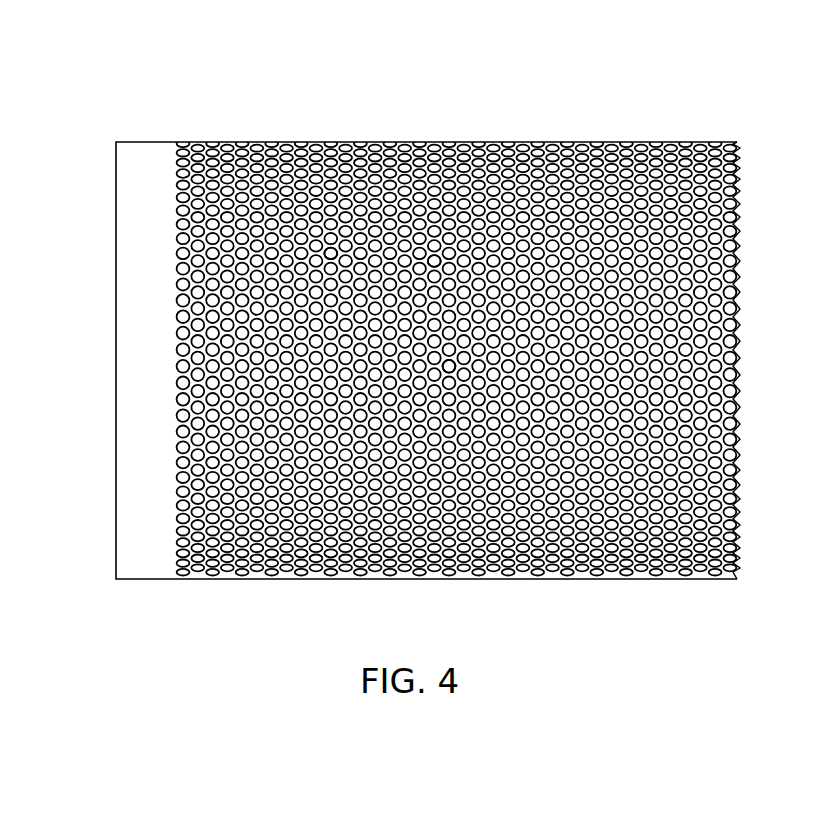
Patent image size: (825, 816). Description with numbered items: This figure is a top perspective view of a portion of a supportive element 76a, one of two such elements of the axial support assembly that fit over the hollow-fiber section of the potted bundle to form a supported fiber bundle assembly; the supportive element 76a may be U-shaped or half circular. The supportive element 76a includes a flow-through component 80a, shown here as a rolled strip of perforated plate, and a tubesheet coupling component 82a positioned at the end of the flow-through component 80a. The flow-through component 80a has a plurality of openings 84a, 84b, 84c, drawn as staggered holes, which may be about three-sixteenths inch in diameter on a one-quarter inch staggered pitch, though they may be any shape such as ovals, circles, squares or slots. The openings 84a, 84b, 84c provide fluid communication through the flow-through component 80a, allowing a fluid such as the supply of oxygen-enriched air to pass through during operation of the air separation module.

The supportive element 76a is at (398, 328).
The tubesheet coupling component 82a is at (398, 360).
The flow-through component 80a is at (457, 380).
The opening 84a is at (434, 261).
The opening 84b is at (330, 253).
The opening 84c is at (449, 370).